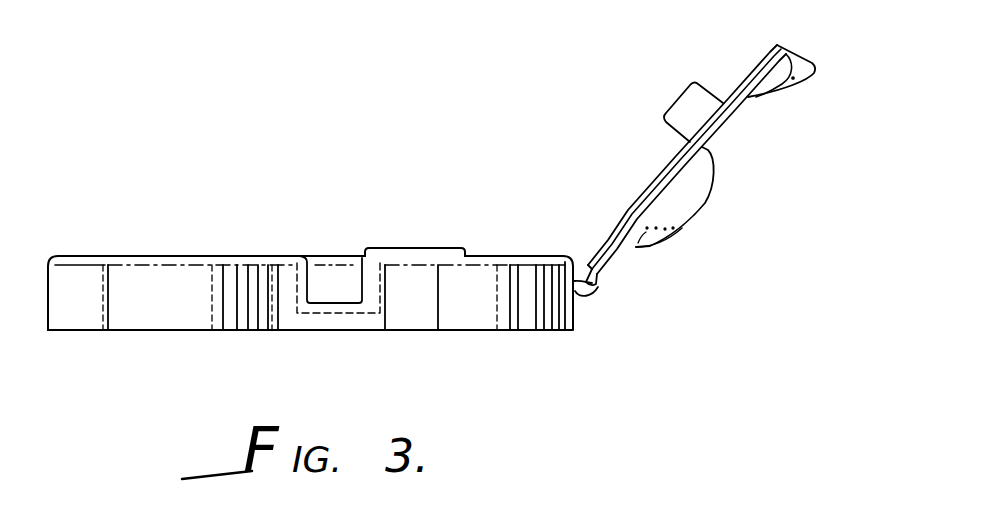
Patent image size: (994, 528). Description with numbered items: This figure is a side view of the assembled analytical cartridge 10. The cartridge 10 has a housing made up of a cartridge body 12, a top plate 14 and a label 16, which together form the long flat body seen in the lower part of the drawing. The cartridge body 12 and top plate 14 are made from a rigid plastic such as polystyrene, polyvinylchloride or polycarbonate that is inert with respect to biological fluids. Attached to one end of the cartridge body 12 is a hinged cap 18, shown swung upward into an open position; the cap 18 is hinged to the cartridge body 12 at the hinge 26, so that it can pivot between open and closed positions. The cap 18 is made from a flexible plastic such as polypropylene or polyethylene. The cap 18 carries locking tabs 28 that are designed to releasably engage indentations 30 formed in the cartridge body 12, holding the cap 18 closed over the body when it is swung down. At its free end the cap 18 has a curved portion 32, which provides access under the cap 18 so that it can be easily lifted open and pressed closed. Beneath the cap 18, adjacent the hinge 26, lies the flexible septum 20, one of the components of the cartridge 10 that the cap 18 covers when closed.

The analytical cartridge 10 is at (449, 362).
The cartridge body 12 is at (519, 313).
The top plate 14 is at (527, 257).
The label 16 is at (319, 256).
The hinged cap 18 is at (767, 65).
The flexible septum 20 is at (688, 213).
The hinge 26 is at (584, 293).
The locking tabs 28 is at (677, 101).
The indentations 30 is at (337, 298).
The curved portion 32 is at (800, 88).